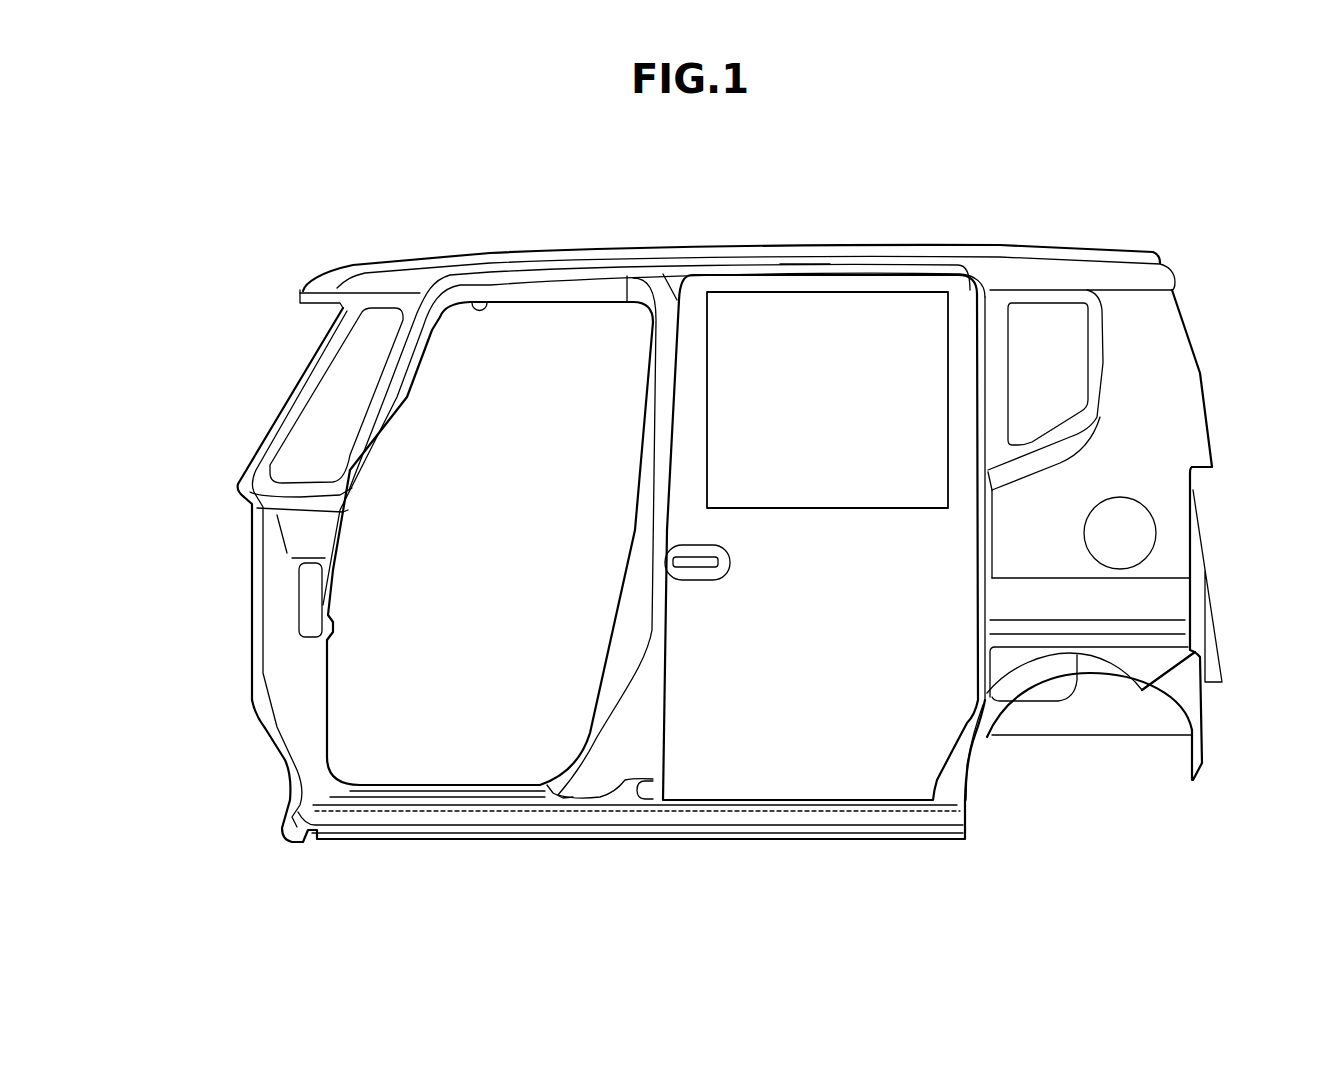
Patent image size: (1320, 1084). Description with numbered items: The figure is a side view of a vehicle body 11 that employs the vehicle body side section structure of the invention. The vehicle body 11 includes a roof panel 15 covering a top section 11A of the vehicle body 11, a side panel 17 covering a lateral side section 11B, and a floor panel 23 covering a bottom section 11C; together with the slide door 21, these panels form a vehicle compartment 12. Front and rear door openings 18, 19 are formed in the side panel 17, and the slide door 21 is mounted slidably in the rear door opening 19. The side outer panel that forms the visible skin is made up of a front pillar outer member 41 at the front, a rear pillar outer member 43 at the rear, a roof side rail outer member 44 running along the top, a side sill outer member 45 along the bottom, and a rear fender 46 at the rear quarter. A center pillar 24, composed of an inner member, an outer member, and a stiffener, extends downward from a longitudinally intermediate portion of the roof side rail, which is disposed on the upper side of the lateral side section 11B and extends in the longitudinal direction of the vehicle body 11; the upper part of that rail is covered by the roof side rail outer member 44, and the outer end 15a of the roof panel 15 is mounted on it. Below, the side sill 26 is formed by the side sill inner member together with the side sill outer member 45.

The vehicle body 11 is at (208, 383).
The top section 11A is at (523, 238).
The lateral side section 11B is at (238, 568).
The bottom section 11C is at (538, 855).
The vehicle compartment 12 is at (604, 333).
The roof panel 15 is at (770, 246).
The outer end 15a is at (814, 253).
The side panel 17 is at (282, 666).
The front door opening 18 is at (490, 297).
The rear door opening 19 is at (962, 263).
The slide door 21 is at (844, 281).
The floor panel 23 is at (430, 812).
The center pillar 24 is at (634, 545).
The side sill 26 is at (396, 787).
The front pillar outer member 41 is at (275, 685).
The rear pillar outer member 43 is at (997, 312).
The roof side rail outer member 44 is at (710, 248).
The side sill outer member 45 is at (363, 797).
The rear fender 46 is at (1150, 423).